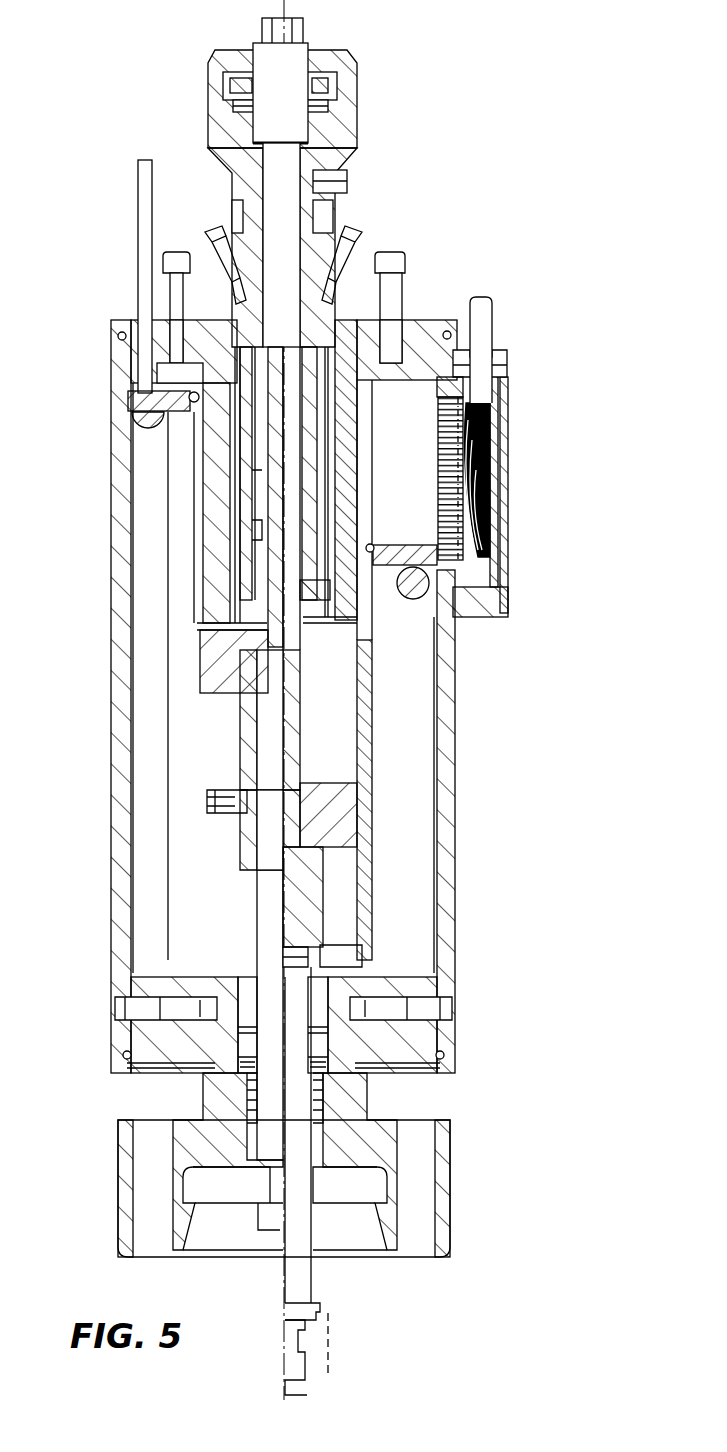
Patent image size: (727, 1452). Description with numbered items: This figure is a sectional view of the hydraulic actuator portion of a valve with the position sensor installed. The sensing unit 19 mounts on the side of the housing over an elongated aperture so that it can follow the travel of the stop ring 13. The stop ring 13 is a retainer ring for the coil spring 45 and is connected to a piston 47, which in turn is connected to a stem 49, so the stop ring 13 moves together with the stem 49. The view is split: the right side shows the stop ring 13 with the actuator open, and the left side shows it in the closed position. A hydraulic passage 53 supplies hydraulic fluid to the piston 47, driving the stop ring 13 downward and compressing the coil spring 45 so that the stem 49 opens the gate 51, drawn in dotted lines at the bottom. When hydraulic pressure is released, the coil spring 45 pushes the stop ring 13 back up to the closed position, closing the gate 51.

The stop ring 13 is at (128, 400).
The sensing unit 19 is at (520, 511).
The coil spring 45 is at (135, 437).
The piston 47 is at (203, 673).
The stem 49 is at (323, 877).
The gate 51 is at (333, 1352).
The hydraulic passage 53 is at (355, 440).